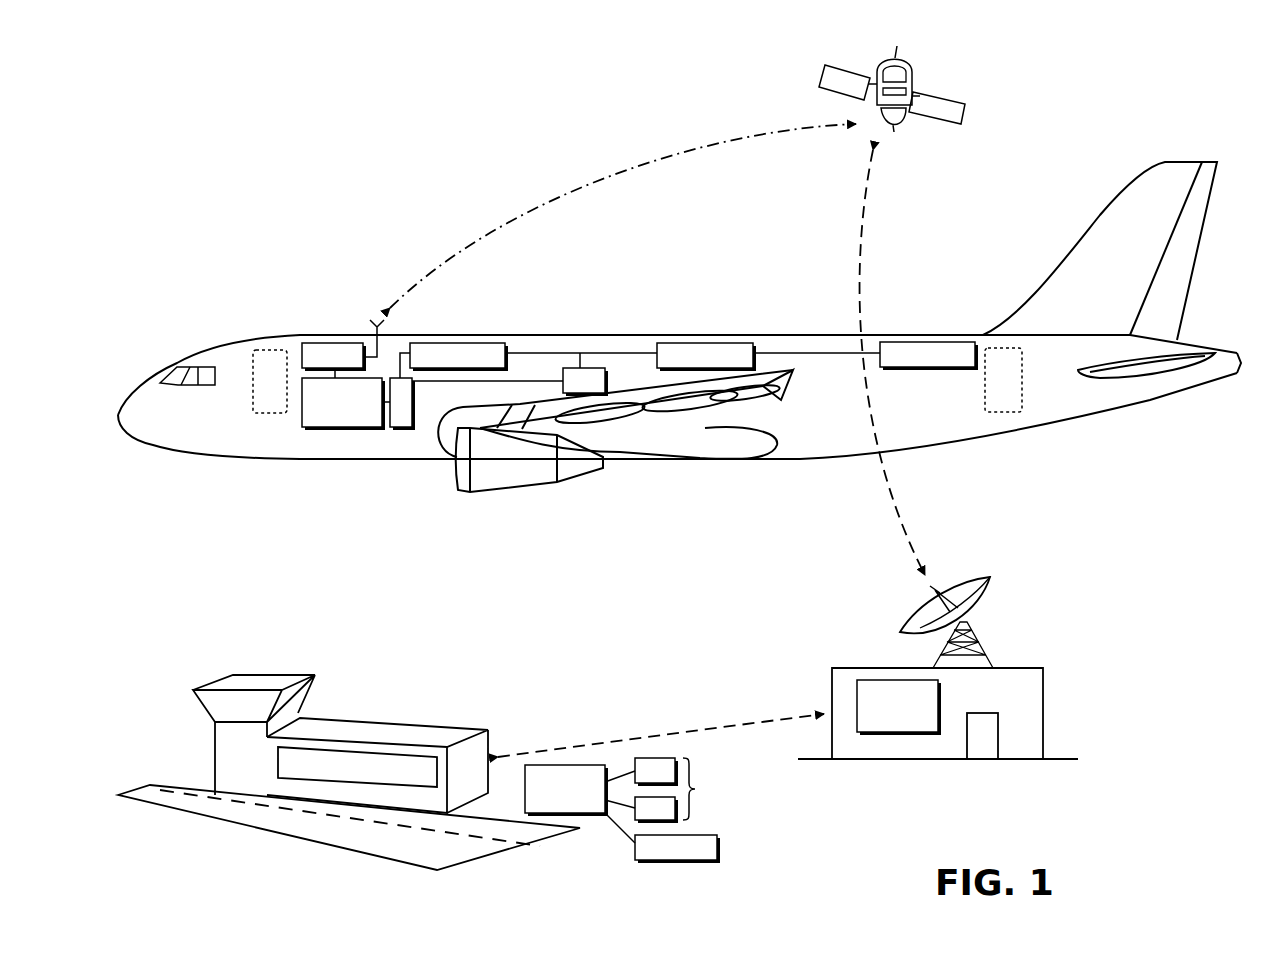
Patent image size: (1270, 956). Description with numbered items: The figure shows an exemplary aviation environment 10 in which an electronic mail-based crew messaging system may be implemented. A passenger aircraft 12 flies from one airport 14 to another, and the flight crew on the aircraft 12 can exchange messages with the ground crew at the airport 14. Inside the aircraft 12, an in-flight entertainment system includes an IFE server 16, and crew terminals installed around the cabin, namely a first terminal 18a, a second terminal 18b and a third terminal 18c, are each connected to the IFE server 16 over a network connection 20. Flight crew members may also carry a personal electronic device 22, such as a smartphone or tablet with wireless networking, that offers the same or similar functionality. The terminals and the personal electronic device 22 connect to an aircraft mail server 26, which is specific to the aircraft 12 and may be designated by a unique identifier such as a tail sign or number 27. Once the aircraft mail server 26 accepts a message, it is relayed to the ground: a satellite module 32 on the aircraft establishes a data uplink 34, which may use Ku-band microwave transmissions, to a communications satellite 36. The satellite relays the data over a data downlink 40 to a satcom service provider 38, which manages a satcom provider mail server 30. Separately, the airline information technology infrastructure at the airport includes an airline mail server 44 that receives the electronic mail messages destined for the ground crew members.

The aviation environment 10 is at (645, 587).
The passenger aircraft 12 is at (157, 445).
The airport 14 is at (238, 828).
The IFE server 16 is at (400, 427).
The first terminal 18a is at (455, 343).
The second terminal 18b is at (700, 343).
The third terminal 18c is at (935, 342).
The network connection 20 is at (637, 353).
The personal electronic device 22 is at (578, 340).
The aircraft mail server 26 is at (318, 427).
The tail sign or number 27 is at (1083, 302).
The satcom provider mail server 30 is at (890, 732).
The satellite module 32 is at (333, 343).
The data uplink 34 is at (587, 196).
The communications satellite 36 is at (905, 108).
The satcom service provider 38 is at (850, 668).
The data downlink 40 is at (860, 237).
The airline mail server 44 is at (597, 820).